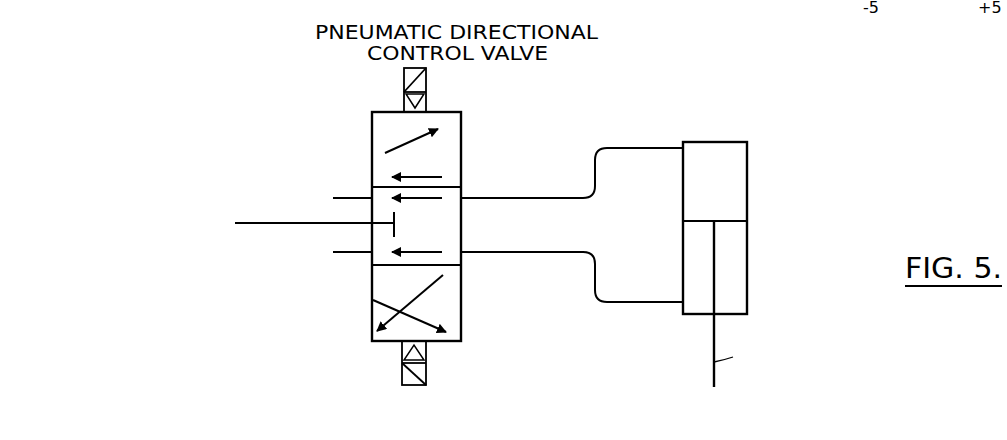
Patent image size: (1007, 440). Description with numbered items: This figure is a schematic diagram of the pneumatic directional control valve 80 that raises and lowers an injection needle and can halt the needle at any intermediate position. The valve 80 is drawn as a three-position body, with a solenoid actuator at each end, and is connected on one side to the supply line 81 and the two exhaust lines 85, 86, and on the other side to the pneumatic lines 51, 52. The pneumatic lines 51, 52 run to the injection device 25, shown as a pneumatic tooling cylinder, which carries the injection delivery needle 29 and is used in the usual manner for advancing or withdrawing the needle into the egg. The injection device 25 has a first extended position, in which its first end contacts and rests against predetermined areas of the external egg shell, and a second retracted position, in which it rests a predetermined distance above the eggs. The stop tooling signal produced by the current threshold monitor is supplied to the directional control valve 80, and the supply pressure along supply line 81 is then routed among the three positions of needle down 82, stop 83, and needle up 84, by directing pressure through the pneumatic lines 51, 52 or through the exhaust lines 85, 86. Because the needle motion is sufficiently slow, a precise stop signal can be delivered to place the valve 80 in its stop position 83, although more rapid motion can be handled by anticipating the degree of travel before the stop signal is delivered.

The injection device 25 is at (747, 248).
The injection delivery needle 29 is at (714, 378).
The pneumatic line 51 is at (645, 148).
The pneumatic line 52 is at (630, 302).
The pneumatic directional control valve 80 is at (461, 113).
The supply line 81 is at (366, 225).
The needle down position 82 is at (461, 160).
The stop position 83 is at (461, 228).
The needle up position 84 is at (461, 291).
The exhaust line 85 is at (345, 256).
The exhaust line 86 is at (362, 197).